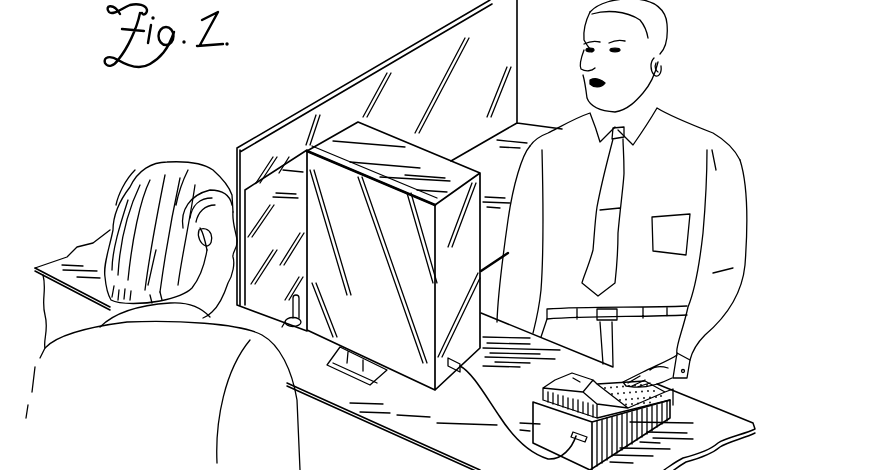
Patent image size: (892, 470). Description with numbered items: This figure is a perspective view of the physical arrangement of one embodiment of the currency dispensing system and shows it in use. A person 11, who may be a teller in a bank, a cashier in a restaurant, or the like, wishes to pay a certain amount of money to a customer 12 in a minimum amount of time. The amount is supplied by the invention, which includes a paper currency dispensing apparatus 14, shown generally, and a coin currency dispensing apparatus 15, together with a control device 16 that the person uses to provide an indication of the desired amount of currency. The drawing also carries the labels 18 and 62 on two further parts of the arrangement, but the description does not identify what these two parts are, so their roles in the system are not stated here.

The person 11 is at (680, 133).
The customer 12 is at (267, 427).
The paper currency dispensing apparatus 14 is at (410, 152).
The coin currency dispensing apparatus 15 is at (303, 216).
The control device 16 is at (657, 428).
The receptacle plate 18 is at (370, 382).
The knob 62 is at (293, 327).